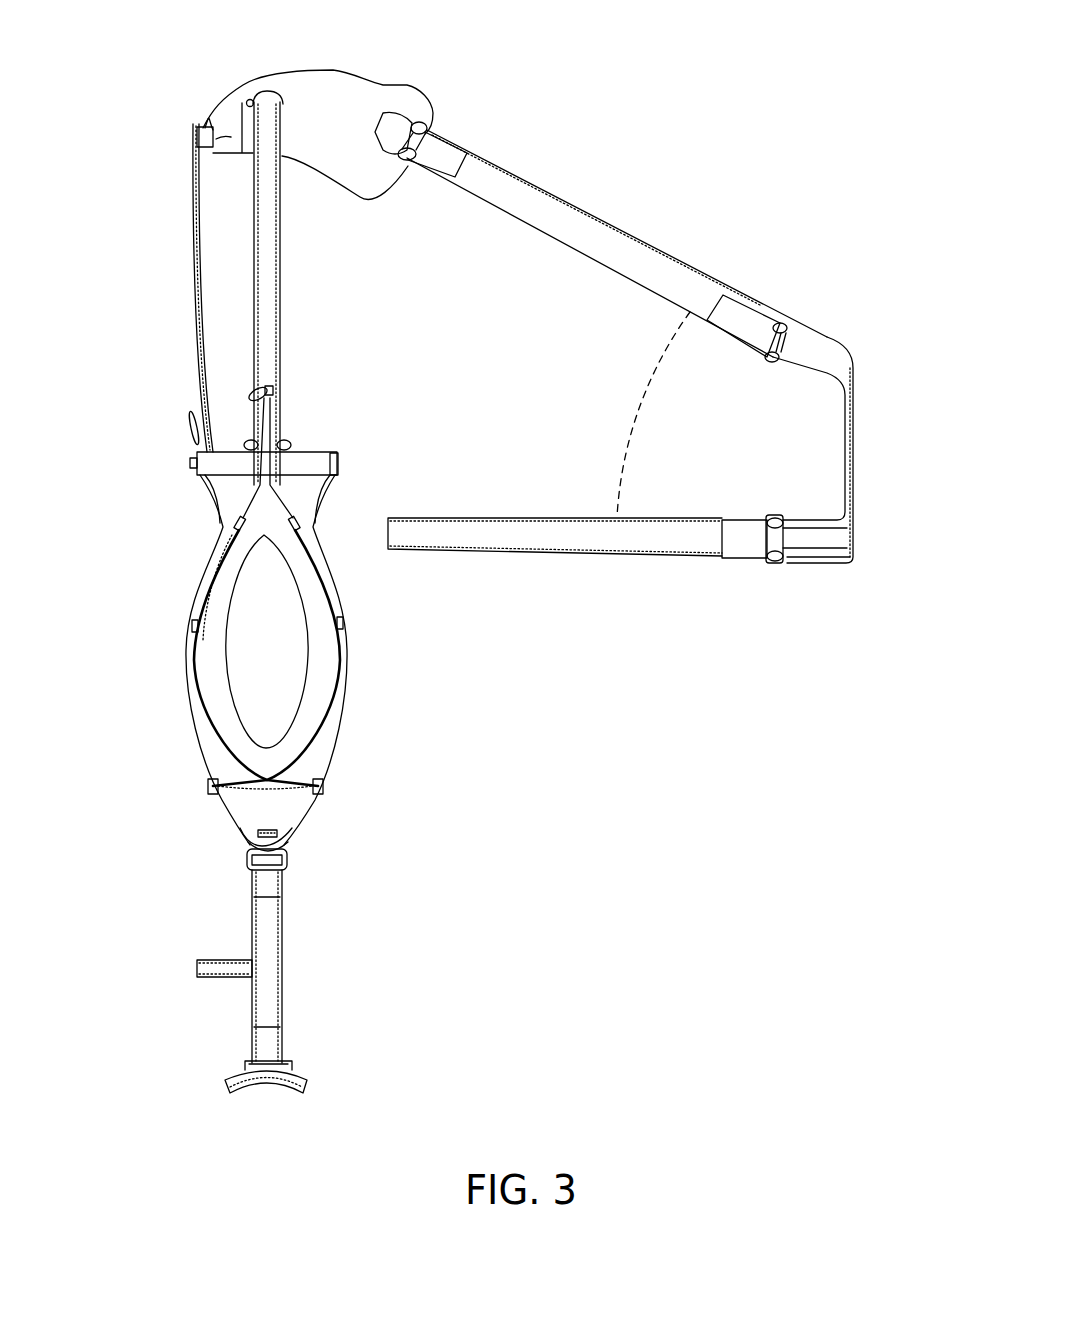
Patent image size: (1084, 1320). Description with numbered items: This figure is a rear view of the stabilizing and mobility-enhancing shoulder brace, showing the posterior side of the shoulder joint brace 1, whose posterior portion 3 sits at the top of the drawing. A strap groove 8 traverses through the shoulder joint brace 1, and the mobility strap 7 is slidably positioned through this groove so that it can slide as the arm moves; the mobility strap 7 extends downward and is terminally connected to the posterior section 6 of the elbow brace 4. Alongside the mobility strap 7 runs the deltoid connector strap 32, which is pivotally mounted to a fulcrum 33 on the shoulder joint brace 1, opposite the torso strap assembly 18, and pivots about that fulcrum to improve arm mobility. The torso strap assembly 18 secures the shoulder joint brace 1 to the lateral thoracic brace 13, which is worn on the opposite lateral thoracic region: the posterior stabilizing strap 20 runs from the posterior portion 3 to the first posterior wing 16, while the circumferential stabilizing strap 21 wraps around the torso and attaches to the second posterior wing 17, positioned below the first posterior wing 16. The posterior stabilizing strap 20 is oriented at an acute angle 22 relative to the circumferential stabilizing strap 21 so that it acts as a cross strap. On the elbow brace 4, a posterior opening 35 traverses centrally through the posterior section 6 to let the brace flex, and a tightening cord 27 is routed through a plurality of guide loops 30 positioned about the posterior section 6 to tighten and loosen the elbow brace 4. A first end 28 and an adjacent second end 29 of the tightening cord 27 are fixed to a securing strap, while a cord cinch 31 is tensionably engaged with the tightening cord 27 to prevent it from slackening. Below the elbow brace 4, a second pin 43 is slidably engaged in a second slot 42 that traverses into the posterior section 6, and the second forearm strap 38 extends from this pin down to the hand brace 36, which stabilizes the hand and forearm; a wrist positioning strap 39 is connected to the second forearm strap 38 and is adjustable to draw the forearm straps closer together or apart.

The shoulder joint brace 1 is at (300, 66).
The posterior portion 3 is at (341, 91).
The elbow brace 4 is at (170, 706).
The posterior section 6 is at (218, 612).
The mobility strap 7 is at (272, 272).
The strap groove 8 is at (256, 99).
The lateral thoracic brace 13 is at (861, 458).
The first posterior wing 16 is at (806, 341).
The second posterior wing 17 is at (818, 558).
The torso strap assembly 18 is at (540, 568).
The posterior stabilizing strap 20 is at (560, 212).
The circumferential stabilizing strap 21 is at (622, 540).
The acute angle 22 is at (628, 420).
The tightening cord 27 is at (322, 572).
The first end 28 is at (223, 789).
The second end 29 is at (323, 790).
The plurality of guide loops 30 is at (237, 523).
The cord cinch 31 is at (273, 389).
The deltoid connector strap 32 is at (192, 233).
The fulcrum 33 is at (195, 131).
The posterior opening 35 is at (294, 652).
The hand brace 36 is at (303, 1084).
The second forearm strap 38 is at (265, 918).
The wrist positioning strap 39 is at (205, 969).
The second slot 42 is at (281, 836).
The second pin 43 is at (245, 838).